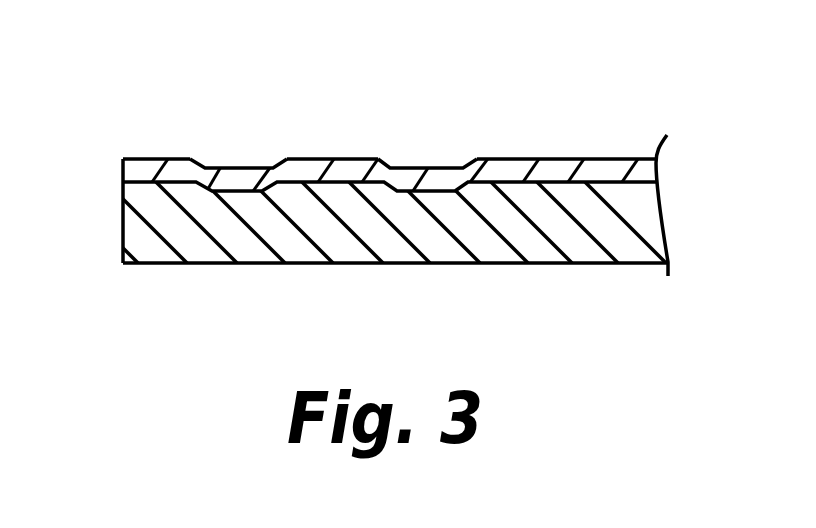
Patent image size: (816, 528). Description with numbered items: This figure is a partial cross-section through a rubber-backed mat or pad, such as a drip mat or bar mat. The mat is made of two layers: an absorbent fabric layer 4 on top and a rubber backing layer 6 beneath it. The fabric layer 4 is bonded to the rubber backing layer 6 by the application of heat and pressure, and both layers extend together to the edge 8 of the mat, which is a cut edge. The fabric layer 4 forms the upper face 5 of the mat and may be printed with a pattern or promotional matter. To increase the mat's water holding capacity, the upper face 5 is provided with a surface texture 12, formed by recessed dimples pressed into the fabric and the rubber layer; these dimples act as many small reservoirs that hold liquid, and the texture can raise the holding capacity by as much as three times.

The surface texture 12 is at (152, 104).
The upper face 5 is at (520, 158).
The absorbent fabric layer 4 is at (600, 165).
The edge 8 is at (123, 225).
The rubber backing layer 6 is at (575, 247).